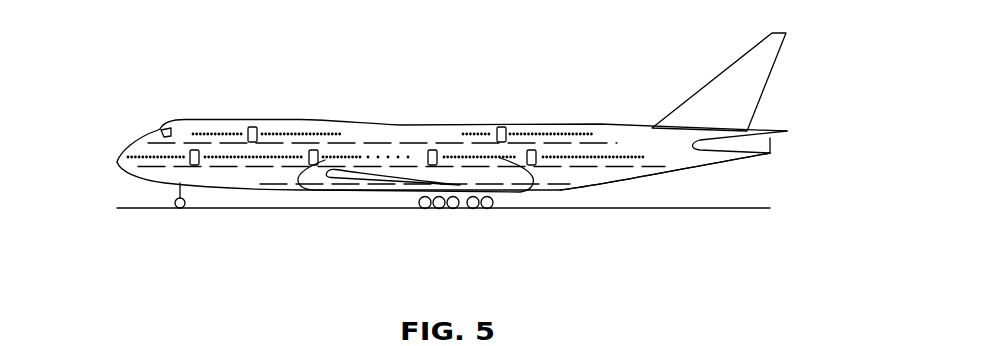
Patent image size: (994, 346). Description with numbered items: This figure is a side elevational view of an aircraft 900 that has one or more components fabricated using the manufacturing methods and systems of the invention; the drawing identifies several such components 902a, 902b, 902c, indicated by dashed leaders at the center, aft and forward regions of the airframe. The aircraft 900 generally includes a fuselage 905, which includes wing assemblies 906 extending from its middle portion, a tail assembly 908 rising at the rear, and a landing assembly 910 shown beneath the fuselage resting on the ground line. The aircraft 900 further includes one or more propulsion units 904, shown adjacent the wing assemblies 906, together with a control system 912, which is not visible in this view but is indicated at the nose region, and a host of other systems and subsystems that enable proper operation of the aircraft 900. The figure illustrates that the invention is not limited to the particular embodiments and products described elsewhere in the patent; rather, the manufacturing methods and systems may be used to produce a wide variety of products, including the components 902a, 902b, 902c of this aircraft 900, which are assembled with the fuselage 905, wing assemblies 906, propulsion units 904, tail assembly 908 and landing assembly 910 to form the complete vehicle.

The aircraft 900 is at (198, 67).
The control system 912 is at (128, 121).
The component 902c is at (106, 143).
The component 902a is at (286, 197).
The component 902b is at (713, 147).
The propulsion unit 904 is at (307, 190).
The wing assembly 906 is at (390, 191).
The fuselage 905 is at (545, 187).
The tail assembly 908 is at (786, 77).
The landing assembly 910 is at (484, 232).